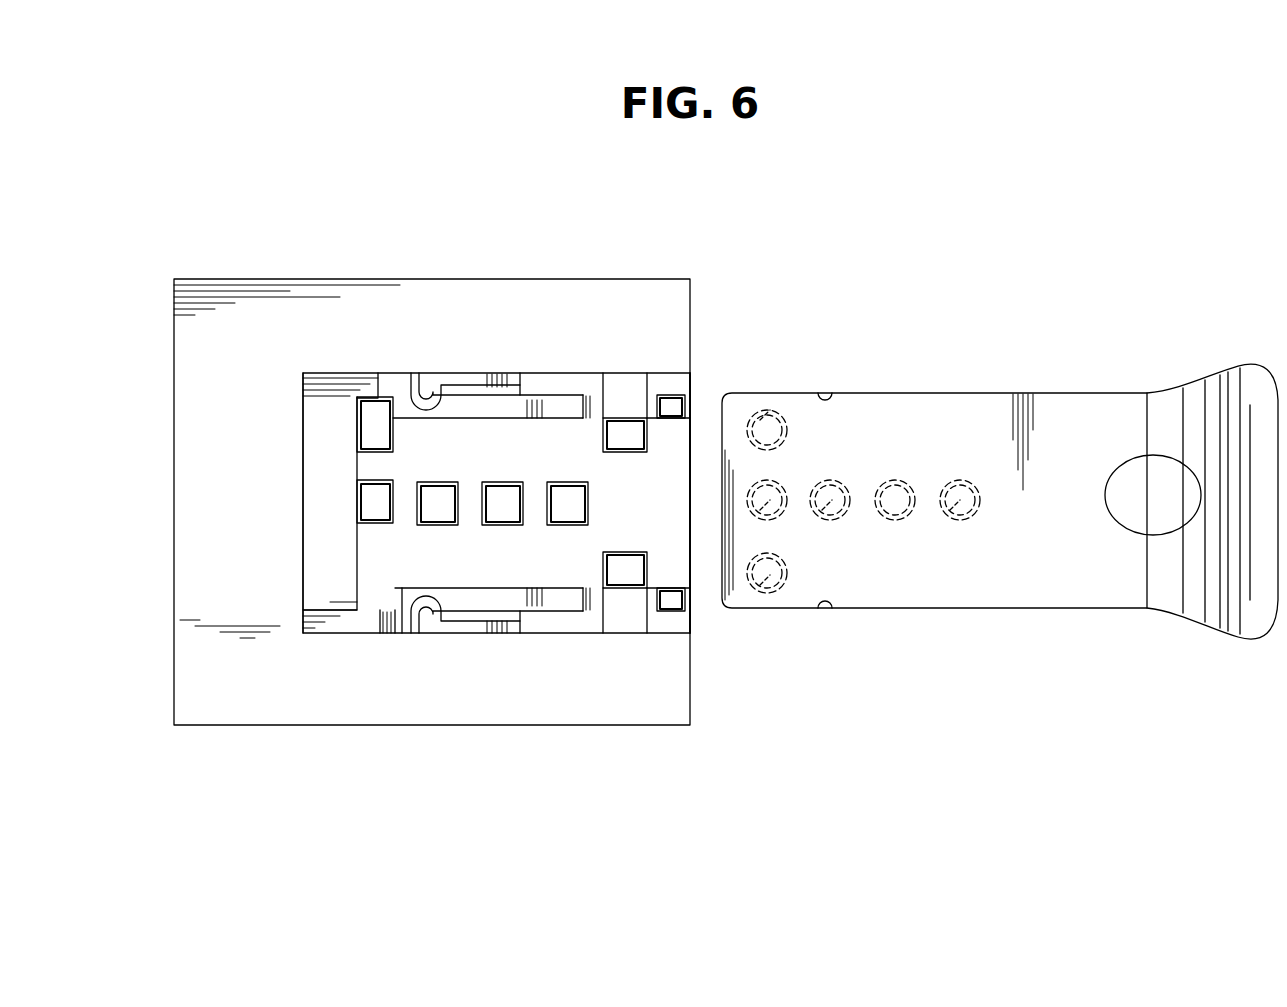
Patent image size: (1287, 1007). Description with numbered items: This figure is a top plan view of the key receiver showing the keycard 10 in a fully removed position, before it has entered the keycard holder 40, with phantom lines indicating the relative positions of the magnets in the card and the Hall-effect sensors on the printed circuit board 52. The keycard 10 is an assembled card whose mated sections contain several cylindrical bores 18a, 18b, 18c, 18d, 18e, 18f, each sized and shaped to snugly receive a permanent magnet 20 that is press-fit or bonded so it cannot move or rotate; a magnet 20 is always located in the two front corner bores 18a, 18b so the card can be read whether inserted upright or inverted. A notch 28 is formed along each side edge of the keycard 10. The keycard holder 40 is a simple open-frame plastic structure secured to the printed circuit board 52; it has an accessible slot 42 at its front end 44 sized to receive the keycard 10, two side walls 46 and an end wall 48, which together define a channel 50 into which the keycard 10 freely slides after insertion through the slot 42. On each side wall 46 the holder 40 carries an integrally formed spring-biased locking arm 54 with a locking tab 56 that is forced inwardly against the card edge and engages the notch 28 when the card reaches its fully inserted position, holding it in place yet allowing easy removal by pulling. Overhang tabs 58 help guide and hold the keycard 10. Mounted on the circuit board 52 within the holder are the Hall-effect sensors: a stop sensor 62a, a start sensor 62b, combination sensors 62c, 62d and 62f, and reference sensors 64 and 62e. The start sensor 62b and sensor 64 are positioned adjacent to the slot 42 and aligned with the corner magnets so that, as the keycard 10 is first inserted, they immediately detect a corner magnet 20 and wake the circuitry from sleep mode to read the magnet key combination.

The keycard 10 is at (1078, 390).
The bore 18a is at (785, 600).
The bore 18b is at (790, 410).
The bore 18c is at (785, 485).
The bore 18d is at (840, 520).
The bore 18e is at (905, 480).
The bore 18f is at (988, 500).
The magnet 20 is at (762, 415).
The notch 28 is at (822, 392).
The keycard holder 40 is at (548, 372).
The slot 42 is at (672, 457).
The front end 44 is at (695, 626).
The side wall 46 is at (628, 412).
The end wall 48 is at (313, 528).
The channel 50 is at (366, 452).
The printed circuit board 52 is at (212, 288).
The spring-biased locking arm 54 is at (490, 374).
The locking tab 56 is at (425, 386).
The overhang tab 58 is at (626, 438).
The stop sensor 62a is at (368, 426).
The start sensor 62b is at (640, 405).
The combination sensor 62c is at (366, 498).
The combination sensor 62d is at (440, 506).
The reference sensor 62e is at (503, 500).
The combination sensor 62f is at (590, 503).
The reference sensor 64 is at (640, 572).